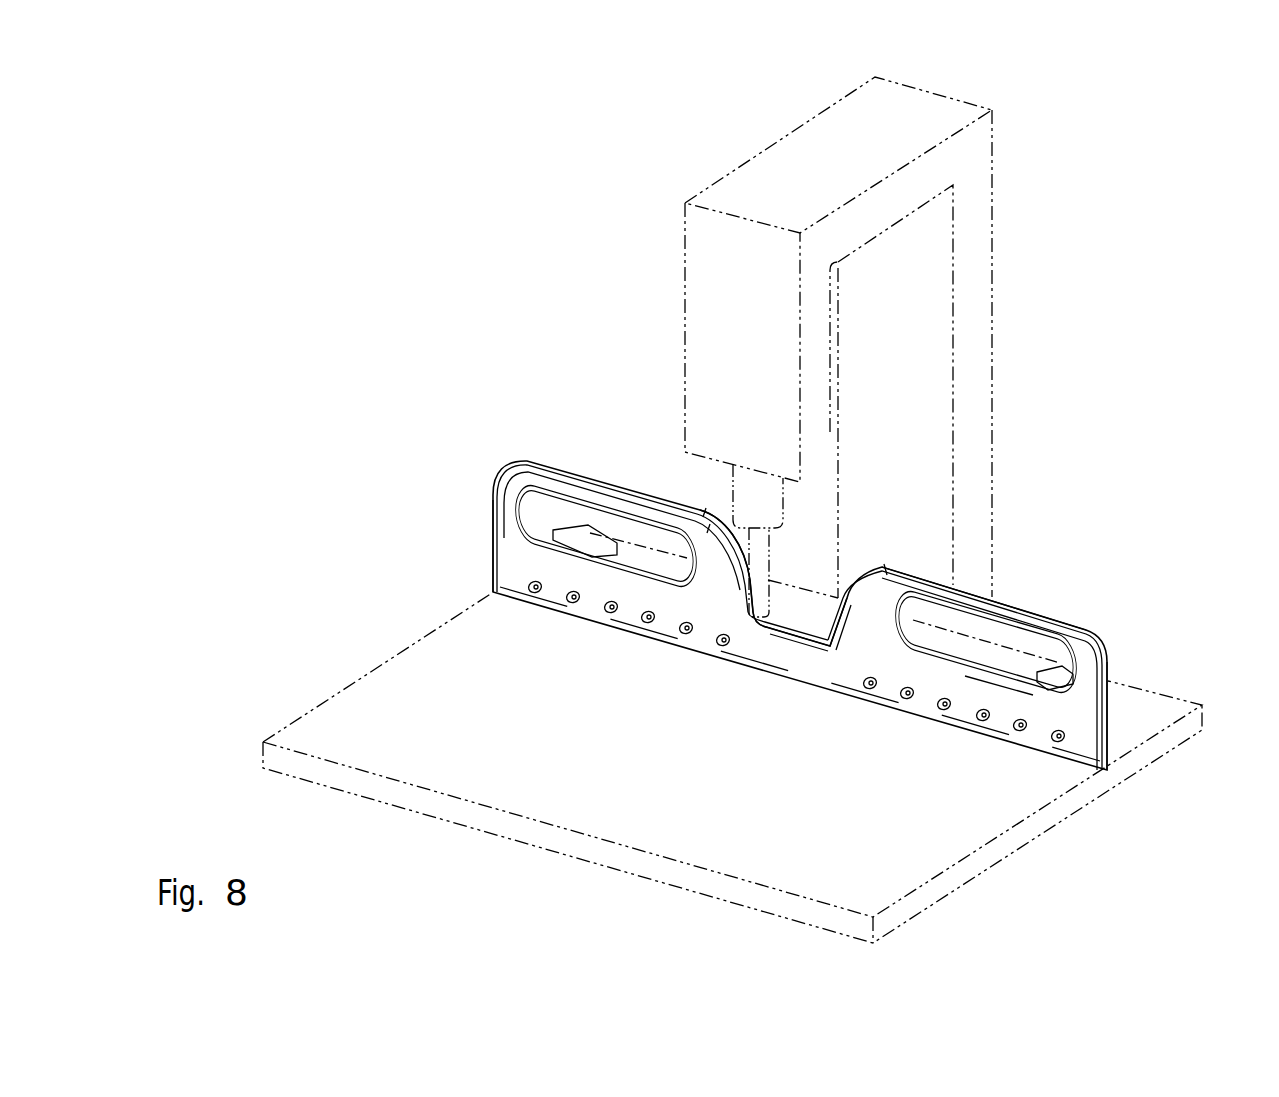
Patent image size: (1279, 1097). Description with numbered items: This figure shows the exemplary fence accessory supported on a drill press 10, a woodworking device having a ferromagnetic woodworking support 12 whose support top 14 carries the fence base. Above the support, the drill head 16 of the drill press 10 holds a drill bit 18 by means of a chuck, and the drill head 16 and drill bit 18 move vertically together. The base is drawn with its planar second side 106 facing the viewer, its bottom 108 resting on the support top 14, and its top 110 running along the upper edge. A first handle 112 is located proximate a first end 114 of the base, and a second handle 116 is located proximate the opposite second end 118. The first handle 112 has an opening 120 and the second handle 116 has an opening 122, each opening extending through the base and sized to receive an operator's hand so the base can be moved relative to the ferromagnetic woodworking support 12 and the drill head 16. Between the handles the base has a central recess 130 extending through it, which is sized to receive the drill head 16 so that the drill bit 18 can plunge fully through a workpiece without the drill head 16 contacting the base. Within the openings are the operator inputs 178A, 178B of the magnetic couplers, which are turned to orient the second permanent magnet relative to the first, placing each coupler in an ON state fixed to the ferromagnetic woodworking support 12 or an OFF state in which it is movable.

The drill press 10 is at (888, 328).
The ferromagnetic woodworking support 12 is at (1008, 858).
The support top 14 is at (728, 800).
The drill head 16 is at (728, 499).
The drill bit 18 is at (780, 540).
The second side 106 is at (713, 615).
The bottom 108 is at (831, 705).
The top 110 is at (926, 560).
The first handle 112 is at (614, 478).
The first end 114 is at (462, 542).
The second handle 116 is at (1016, 590).
The second end 118 is at (1128, 735).
The opening 120 is at (551, 516).
The opening 122 is at (1038, 638).
The central recess 130 is at (826, 568).
The operator input 178A is at (1072, 662).
The operator input 178B is at (548, 516).